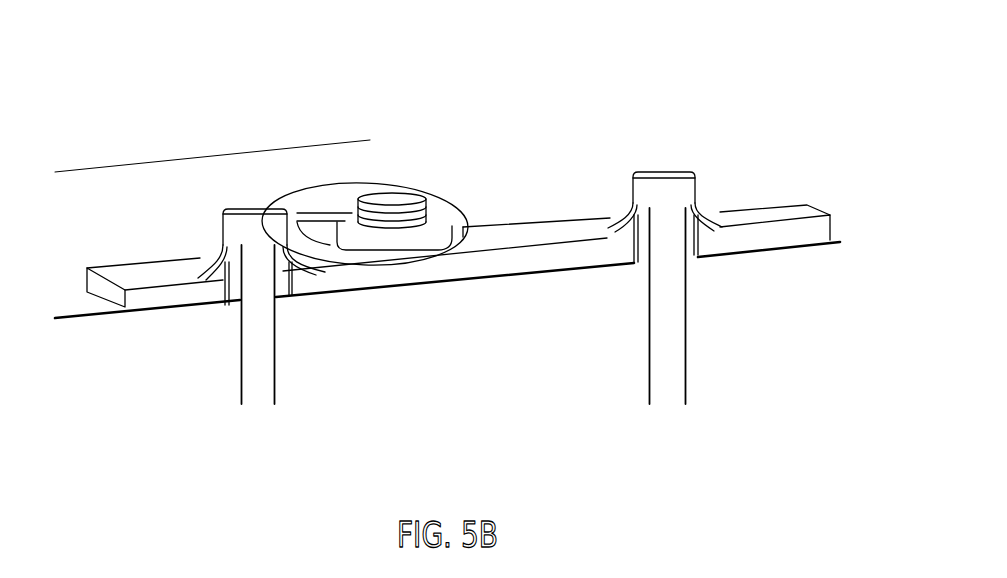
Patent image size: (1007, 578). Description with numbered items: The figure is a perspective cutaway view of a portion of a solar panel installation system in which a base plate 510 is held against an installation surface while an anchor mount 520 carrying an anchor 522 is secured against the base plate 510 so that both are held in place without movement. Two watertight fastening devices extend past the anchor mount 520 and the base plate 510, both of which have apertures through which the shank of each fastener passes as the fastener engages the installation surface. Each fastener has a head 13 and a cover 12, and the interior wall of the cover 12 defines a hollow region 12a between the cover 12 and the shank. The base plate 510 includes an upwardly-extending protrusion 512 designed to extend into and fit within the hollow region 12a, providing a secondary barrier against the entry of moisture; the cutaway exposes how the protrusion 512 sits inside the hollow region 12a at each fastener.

The cover 12 is at (425, 263).
The hollow region 12a is at (283, 254).
The head 13 is at (251, 208).
The base plate 510 is at (500, 277).
The protrusion 512 is at (238, 286).
The anchor mount 520 is at (532, 224).
The anchor 522 is at (322, 184).